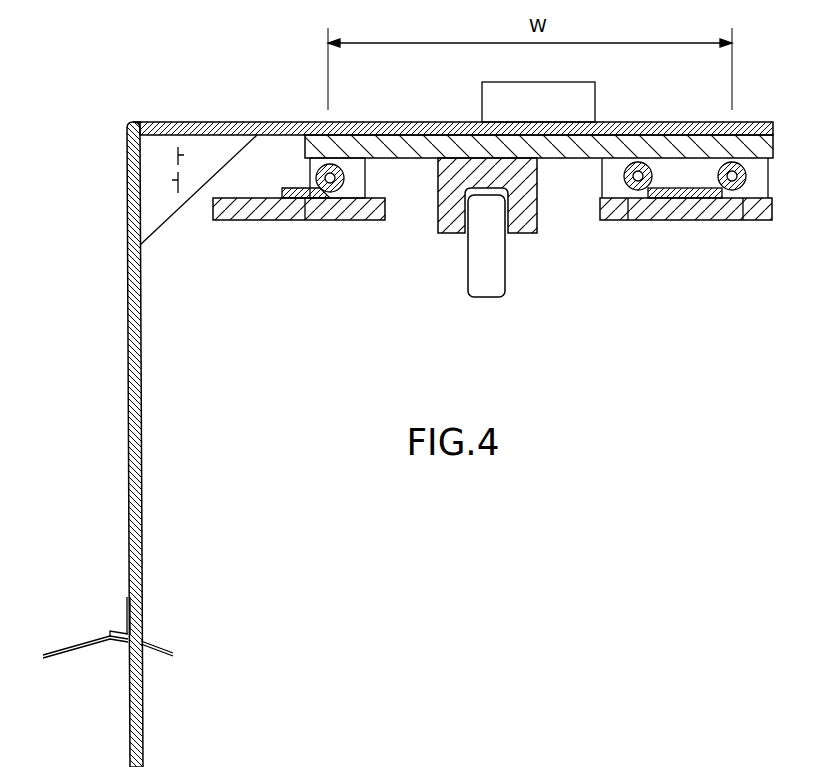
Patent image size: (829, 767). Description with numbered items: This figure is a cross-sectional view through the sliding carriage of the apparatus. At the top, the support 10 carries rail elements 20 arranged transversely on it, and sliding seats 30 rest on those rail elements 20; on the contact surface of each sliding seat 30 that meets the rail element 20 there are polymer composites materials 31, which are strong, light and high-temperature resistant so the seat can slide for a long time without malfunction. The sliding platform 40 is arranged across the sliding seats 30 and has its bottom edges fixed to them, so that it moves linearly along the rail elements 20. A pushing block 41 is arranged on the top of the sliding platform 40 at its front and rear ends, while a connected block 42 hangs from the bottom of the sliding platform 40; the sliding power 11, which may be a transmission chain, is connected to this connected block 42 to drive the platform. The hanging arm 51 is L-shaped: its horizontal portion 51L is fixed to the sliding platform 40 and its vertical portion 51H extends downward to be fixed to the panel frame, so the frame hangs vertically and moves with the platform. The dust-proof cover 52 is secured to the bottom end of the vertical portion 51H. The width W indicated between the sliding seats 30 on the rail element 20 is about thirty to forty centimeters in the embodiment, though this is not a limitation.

The support 10 is at (253, 221).
The sliding power 11 is at (468, 271).
The rail element 20 is at (305, 221).
The sliding seat 30 is at (353, 178).
The polymer composites materials 31 is at (486, 762).
The sliding platform 40 is at (415, 150).
The pushing block 41 is at (590, 100).
The connected block 42 is at (528, 205).
The hanging arm 51 is at (444, 386).
The vertical portion 51H is at (123, 172).
The horizontal portion 51L is at (287, 122).
The dust-proof cover 52 is at (80, 638).